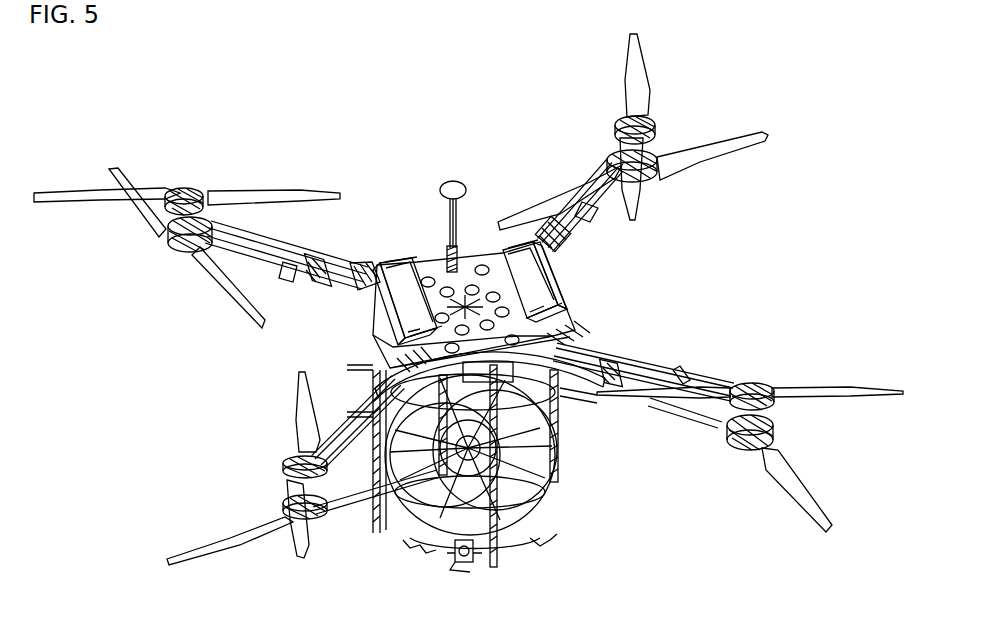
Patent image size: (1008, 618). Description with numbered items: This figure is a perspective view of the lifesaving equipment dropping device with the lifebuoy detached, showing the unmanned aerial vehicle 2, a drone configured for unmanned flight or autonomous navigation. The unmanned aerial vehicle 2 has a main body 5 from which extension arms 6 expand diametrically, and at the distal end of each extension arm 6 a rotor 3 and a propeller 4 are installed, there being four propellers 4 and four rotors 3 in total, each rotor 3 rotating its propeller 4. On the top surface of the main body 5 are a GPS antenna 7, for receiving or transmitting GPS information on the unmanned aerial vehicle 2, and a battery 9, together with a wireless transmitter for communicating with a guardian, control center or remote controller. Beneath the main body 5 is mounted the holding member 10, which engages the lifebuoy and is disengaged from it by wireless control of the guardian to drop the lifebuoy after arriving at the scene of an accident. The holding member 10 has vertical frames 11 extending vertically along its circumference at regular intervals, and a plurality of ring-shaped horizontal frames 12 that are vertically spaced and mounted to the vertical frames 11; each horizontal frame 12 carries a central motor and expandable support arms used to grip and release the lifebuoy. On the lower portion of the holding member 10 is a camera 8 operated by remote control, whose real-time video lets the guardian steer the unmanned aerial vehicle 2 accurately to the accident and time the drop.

The unmanned aerial vehicle 2 is at (398, 152).
The rotor 3 is at (163, 256).
The propeller 4 is at (217, 296).
The main body 5 is at (483, 257).
The extension arm 6 is at (288, 270).
The GPS antenna 7 is at (454, 181).
The camera 8 is at (463, 563).
The battery 9 is at (395, 263).
The holding member 10 is at (605, 499).
The vertical frame 11 is at (565, 404).
The horizontal frame 12 is at (565, 434).